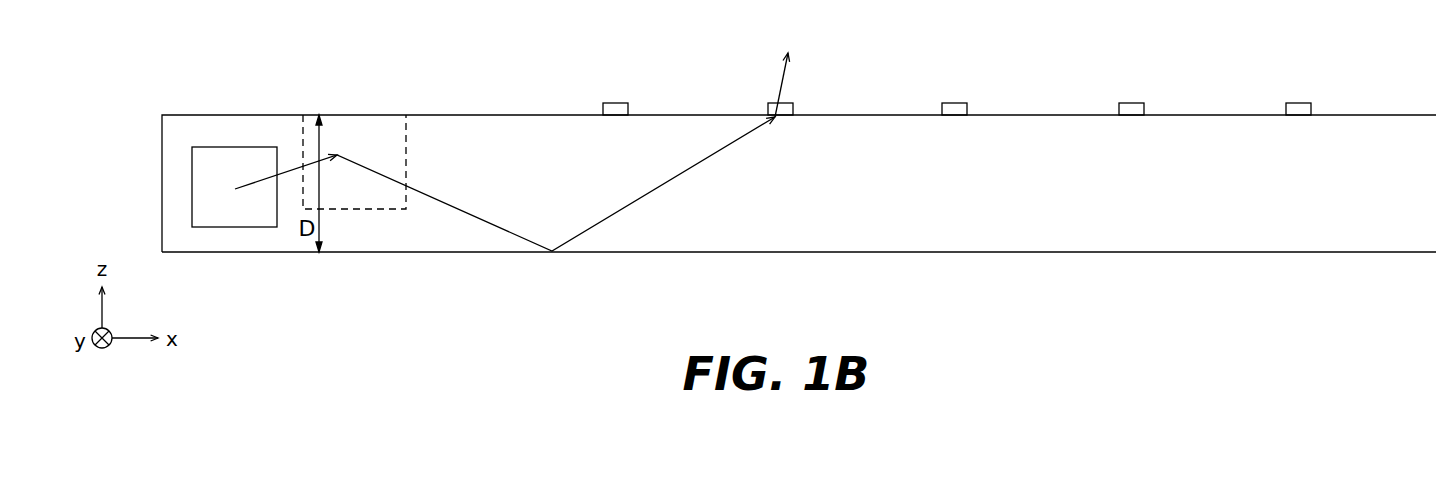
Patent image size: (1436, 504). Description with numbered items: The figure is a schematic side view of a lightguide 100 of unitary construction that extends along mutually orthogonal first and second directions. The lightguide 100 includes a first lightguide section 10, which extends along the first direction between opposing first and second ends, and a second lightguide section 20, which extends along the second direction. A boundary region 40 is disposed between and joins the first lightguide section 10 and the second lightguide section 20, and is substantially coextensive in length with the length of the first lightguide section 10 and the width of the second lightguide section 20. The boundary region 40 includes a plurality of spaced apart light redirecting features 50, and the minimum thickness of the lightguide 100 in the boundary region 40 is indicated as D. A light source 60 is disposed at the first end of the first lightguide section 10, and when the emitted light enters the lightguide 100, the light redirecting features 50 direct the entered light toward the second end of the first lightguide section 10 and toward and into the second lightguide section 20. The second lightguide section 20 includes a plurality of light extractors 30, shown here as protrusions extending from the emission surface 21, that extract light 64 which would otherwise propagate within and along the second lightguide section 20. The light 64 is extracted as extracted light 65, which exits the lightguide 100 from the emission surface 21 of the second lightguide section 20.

The first lightguide section 10 is at (212, 130).
The second lightguide section 20 is at (1385, 132).
The emission surface 21 is at (1050, 113).
The light extractors 30 is at (1295, 108).
The boundary region 40 is at (375, 235).
The light redirecting features 50 is at (386, 127).
The light source 60 is at (205, 193).
The light 64 is at (637, 200).
The extracted light 65 is at (785, 80).
The lightguide 100 is at (1308, 320).